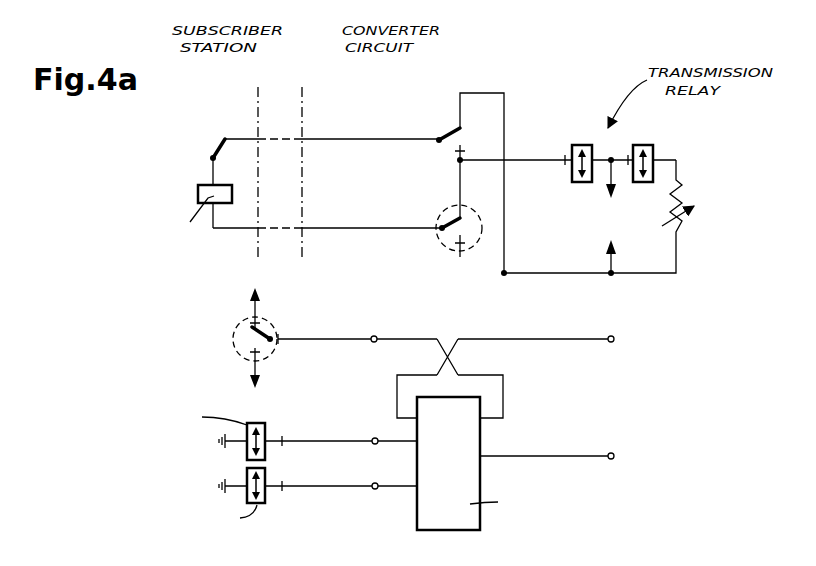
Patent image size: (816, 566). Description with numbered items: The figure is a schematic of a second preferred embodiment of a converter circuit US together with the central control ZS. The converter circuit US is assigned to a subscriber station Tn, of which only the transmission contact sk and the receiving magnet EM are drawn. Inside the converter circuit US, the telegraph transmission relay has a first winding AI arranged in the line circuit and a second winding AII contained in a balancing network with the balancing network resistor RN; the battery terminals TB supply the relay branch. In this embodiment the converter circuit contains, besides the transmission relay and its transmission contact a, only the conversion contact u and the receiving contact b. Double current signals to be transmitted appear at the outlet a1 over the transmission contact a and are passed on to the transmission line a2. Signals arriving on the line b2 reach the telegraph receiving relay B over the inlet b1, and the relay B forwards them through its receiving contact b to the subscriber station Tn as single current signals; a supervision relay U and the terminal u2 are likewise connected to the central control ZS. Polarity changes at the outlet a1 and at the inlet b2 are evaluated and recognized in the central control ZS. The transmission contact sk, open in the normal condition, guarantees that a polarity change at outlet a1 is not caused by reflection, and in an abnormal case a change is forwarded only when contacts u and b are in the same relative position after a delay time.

The subscriber station Tn is at (249, 164).
The converter circuit US is at (435, 170).
The transmission contact sk is at (208, 158).
The receiving magnet EM is at (173, 224).
The conversion contact u is at (448, 136).
The receiving contact b is at (459, 208).
The first winding AI is at (582, 152).
The second winding AII is at (643, 152).
The telegraph battery terminals TB is at (627, 216).
The balancing network resistor RN is at (603, 218).
The transmission contact a is at (255, 340).
The outlet a1 is at (357, 329).
The transmission line a2 is at (518, 374).
The central control ZS is at (503, 463).
The telegraph receiving relay B is at (201, 429).
The inlet b1 is at (341, 431).
The supervision relay U is at (206, 503).
The transfer contact u2 is at (341, 475).
The line b2 is at (560, 457).